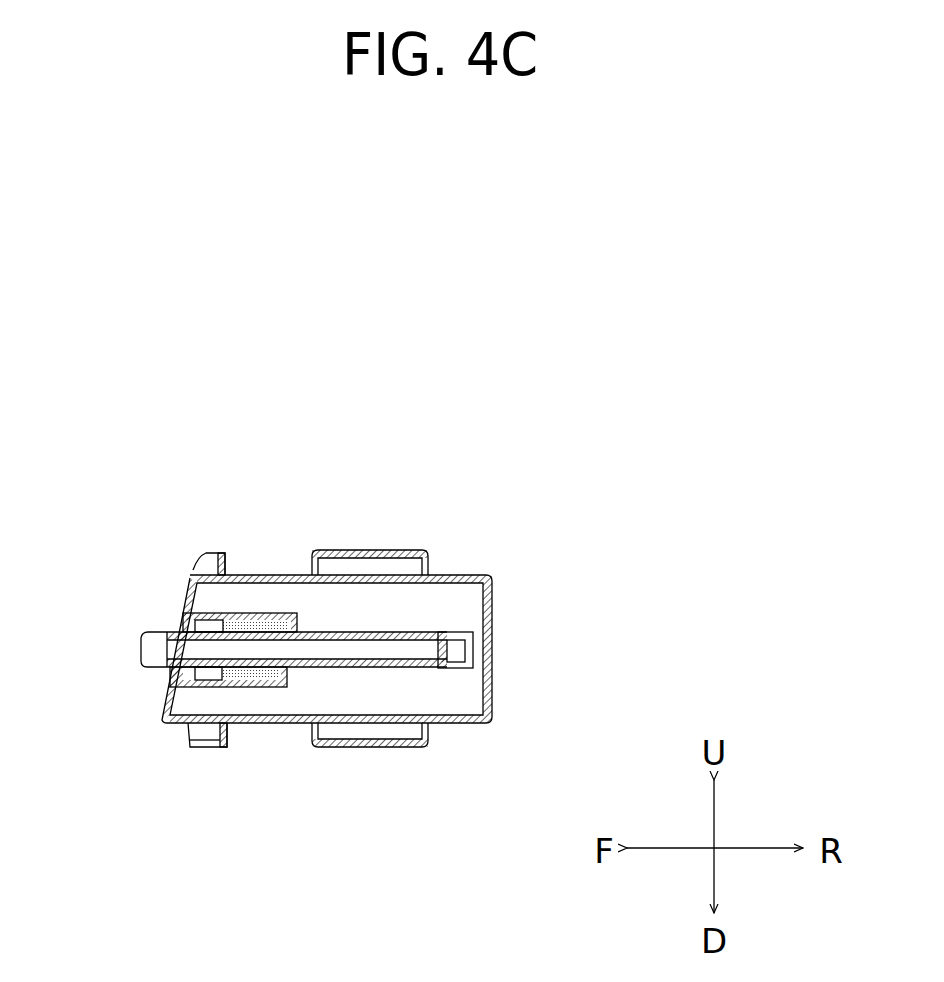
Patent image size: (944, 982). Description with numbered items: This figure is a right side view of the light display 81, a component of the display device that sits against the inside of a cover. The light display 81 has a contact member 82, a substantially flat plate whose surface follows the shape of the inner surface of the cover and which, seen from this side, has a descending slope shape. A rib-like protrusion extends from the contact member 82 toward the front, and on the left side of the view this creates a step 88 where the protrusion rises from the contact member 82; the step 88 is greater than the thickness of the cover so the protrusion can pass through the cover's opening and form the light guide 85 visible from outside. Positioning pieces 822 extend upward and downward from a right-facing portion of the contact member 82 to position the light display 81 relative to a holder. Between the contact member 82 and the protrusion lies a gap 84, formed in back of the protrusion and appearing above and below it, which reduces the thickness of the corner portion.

The light display 81 is at (176, 534).
The contact member 82 is at (242, 593).
The positioning pieces 822 is at (378, 567).
The gap 84 is at (268, 625).
The light guide 85 is at (413, 647).
The step 88 is at (163, 630).